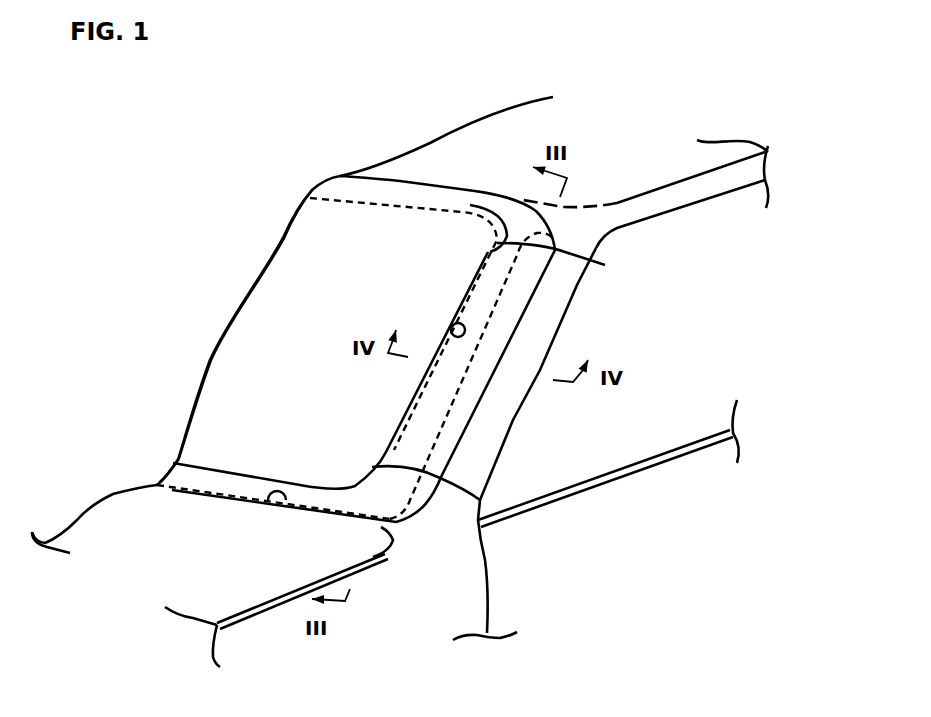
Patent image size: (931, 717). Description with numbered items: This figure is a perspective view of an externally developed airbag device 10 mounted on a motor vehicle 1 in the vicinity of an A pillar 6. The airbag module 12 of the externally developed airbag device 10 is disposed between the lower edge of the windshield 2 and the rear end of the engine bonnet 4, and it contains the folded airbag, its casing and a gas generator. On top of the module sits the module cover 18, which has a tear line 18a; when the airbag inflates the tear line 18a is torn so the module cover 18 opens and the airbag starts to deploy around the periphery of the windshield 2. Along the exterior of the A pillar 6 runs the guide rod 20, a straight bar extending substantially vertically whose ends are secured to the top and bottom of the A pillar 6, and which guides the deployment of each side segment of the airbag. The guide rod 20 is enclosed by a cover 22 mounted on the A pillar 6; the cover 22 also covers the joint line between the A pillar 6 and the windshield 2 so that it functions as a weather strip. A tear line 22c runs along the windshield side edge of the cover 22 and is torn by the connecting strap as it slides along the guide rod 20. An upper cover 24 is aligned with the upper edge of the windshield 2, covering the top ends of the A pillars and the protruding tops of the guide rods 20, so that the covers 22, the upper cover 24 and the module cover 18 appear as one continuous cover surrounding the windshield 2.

The motor vehicle 1 is at (545, 611).
The windshield 2 is at (302, 277).
The engine bonnet 4 is at (118, 534).
The A pillar 6 is at (514, 407).
The externally developed airbag device 10 is at (500, 451).
The airbag module 12 is at (208, 437).
The module cover 18 is at (250, 483).
The tear line 18a is at (267, 502).
The guide rod 20 is at (507, 277).
The cover 22 is at (507, 319).
The tear line 22c is at (452, 323).
The upper cover 24 is at (347, 190).